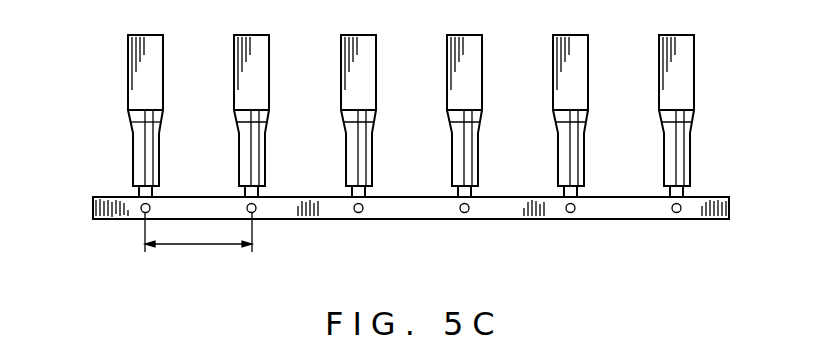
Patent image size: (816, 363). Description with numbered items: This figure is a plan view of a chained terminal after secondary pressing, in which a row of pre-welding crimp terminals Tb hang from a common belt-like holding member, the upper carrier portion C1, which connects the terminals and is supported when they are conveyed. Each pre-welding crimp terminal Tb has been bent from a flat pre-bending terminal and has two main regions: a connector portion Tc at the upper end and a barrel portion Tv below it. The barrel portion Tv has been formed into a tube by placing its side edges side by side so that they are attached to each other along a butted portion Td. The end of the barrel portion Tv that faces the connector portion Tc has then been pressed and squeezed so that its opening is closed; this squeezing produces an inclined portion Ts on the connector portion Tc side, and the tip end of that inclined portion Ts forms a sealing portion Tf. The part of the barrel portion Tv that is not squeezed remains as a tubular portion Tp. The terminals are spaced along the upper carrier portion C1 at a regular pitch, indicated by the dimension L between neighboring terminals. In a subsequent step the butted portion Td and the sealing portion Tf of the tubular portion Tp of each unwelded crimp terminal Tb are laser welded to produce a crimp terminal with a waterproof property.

The pre-welding crimp terminal Tb is at (398, 121).
The connector portion Tc is at (143, 65).
The sealing portion Tf is at (130, 120).
The inclined portion Ts is at (142, 122).
The barrel portion Tv is at (165, 142).
The butted portion Td is at (148, 155).
The tubular portion Tp is at (138, 162).
The upper carrier portion C1 is at (493, 210).
The terminal pitch L is at (198, 244).